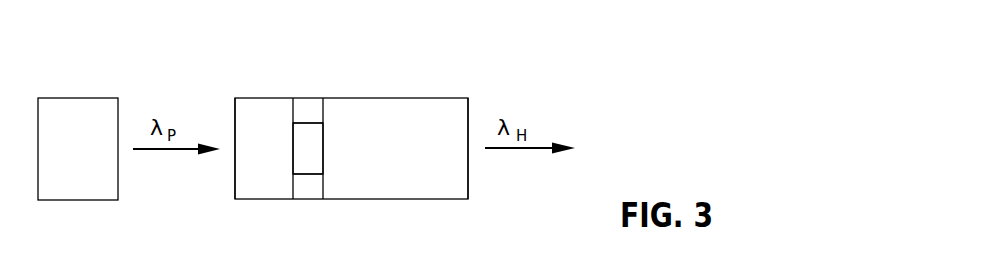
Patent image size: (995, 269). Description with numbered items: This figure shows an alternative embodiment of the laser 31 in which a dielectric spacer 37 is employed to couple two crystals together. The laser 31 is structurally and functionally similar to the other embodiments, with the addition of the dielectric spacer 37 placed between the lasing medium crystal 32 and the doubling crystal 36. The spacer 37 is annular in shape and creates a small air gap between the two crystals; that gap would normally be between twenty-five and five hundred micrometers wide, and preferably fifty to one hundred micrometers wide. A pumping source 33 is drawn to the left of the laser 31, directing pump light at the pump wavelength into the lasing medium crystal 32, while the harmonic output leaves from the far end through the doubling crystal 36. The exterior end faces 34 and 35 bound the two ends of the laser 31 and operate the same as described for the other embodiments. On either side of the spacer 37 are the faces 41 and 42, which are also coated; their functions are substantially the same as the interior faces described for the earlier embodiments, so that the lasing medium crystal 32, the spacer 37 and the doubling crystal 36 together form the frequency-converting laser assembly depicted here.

The laser 31 is at (345, 72).
The lasing medium crystal 32 is at (252, 107).
The pumping source 33 is at (79, 97).
The exterior end face 34 is at (234, 196).
The exterior end face 35 is at (470, 186).
The doubling crystal 36 is at (440, 108).
The dielectric spacer 37 is at (309, 190).
The face 41 is at (295, 163).
The face 42 is at (323, 143).